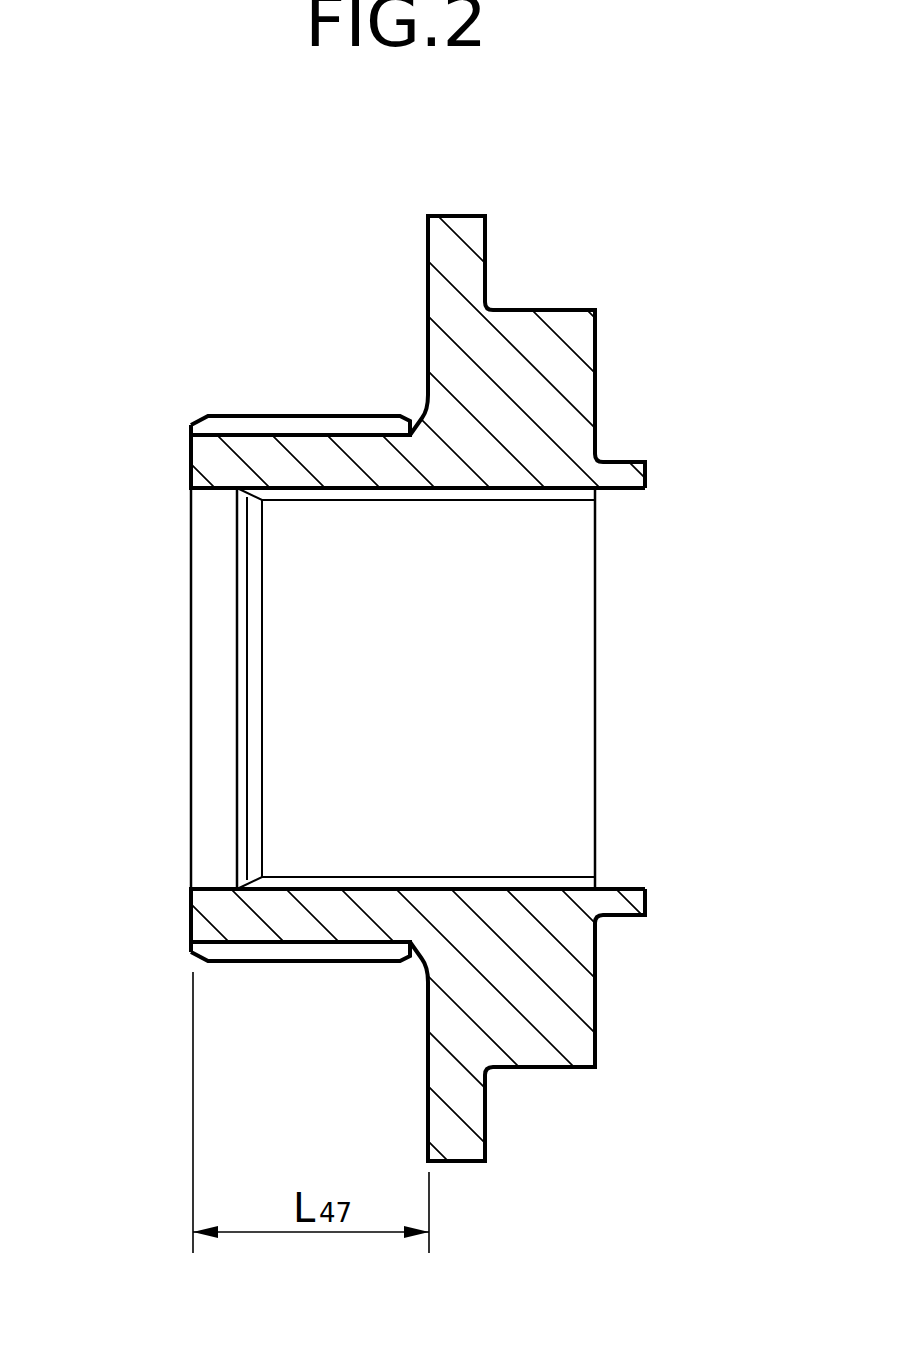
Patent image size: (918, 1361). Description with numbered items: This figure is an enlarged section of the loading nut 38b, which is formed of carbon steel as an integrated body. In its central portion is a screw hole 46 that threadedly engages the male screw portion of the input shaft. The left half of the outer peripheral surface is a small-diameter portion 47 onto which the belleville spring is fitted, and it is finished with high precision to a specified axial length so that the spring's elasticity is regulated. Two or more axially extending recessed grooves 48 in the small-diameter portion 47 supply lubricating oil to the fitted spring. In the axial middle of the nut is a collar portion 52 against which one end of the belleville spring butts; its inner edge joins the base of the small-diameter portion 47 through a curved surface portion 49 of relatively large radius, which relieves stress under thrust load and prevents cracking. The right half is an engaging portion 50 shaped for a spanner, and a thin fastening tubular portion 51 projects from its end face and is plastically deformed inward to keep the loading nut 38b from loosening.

The loading nut 38b is at (632, 946).
The screw hole 46 is at (560, 500).
The small-diameter portion 47 is at (213, 470).
The recessed grooves 48 is at (283, 428).
The curved surface portion 49 is at (424, 406).
The engaging portion 50 is at (545, 335).
The fastening tubular portion 51 is at (625, 470).
The collar portion 52 is at (455, 240).